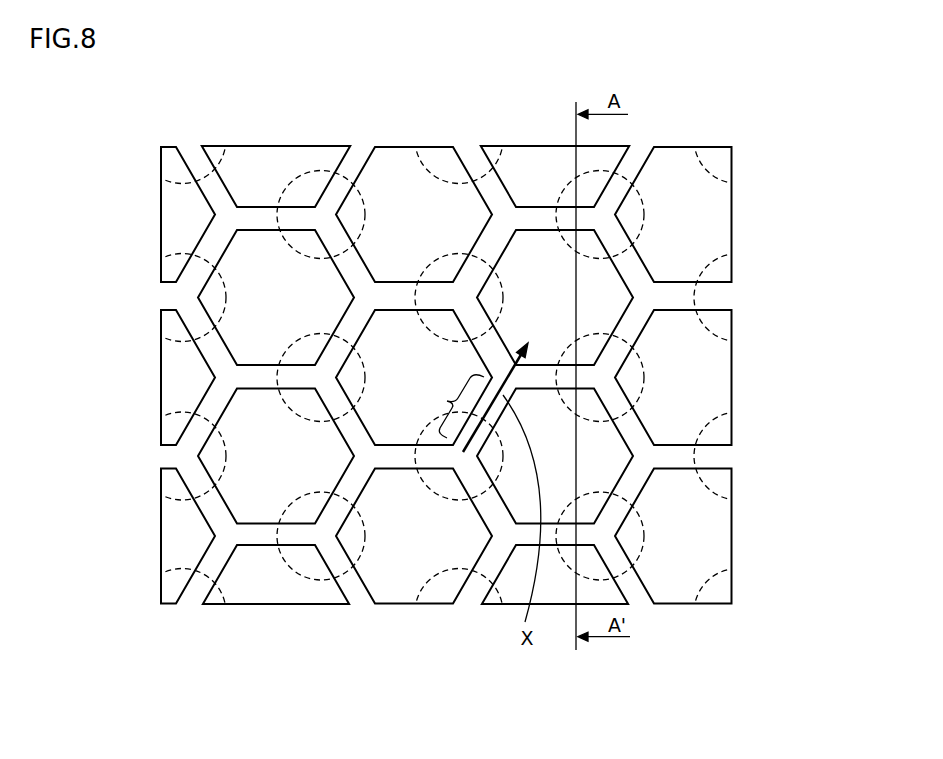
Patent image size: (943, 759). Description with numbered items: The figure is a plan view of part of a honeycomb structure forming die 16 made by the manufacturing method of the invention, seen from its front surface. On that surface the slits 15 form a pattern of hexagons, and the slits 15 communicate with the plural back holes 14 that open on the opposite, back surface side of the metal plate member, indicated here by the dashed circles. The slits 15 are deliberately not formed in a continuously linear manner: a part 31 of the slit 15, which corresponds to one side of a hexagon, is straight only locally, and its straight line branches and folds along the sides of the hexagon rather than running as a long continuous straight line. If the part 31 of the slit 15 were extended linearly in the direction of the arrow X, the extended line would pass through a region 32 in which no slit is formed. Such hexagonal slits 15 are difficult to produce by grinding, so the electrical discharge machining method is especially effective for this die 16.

The back hole 14 is at (647, 370).
The slit 15 is at (637, 272).
The honeycomb structure forming die 16 is at (788, 108).
The part of the slit 31 is at (449, 402).
The region in which no slit is formed 32 is at (405, 250).